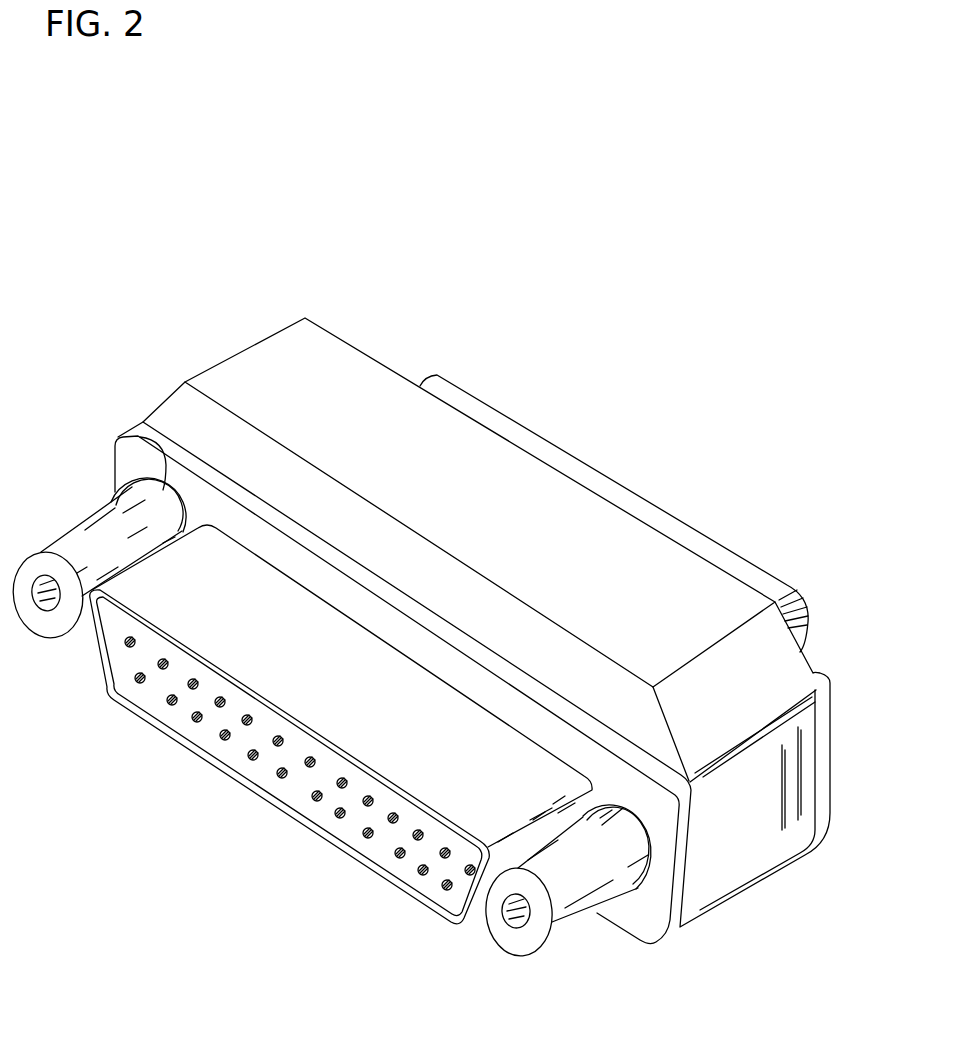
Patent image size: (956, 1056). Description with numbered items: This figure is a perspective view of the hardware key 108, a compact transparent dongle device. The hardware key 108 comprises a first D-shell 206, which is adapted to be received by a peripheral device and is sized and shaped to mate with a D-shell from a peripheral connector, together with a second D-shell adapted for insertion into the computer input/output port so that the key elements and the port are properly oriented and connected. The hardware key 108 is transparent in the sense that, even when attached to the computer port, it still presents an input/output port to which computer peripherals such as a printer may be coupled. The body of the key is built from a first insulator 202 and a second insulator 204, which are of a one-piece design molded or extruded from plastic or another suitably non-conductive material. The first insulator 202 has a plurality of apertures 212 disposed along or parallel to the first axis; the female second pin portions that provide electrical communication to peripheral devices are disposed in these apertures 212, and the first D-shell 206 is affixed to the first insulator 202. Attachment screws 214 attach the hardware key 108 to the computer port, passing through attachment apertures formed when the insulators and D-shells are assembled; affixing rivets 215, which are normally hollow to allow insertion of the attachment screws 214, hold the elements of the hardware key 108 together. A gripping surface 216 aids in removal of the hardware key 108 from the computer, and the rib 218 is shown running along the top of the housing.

The hardware key 108 is at (247, 345).
The first insulator 202 is at (233, 747).
The second insulator 204 is at (832, 797).
The first D-shell 206 is at (283, 811).
The apertures 212 is at (137, 683).
The attachment screws 214 is at (55, 542).
The affixing rivets 215 is at (165, 460).
The gripping surface 216 is at (790, 753).
The rib 218 is at (620, 482).